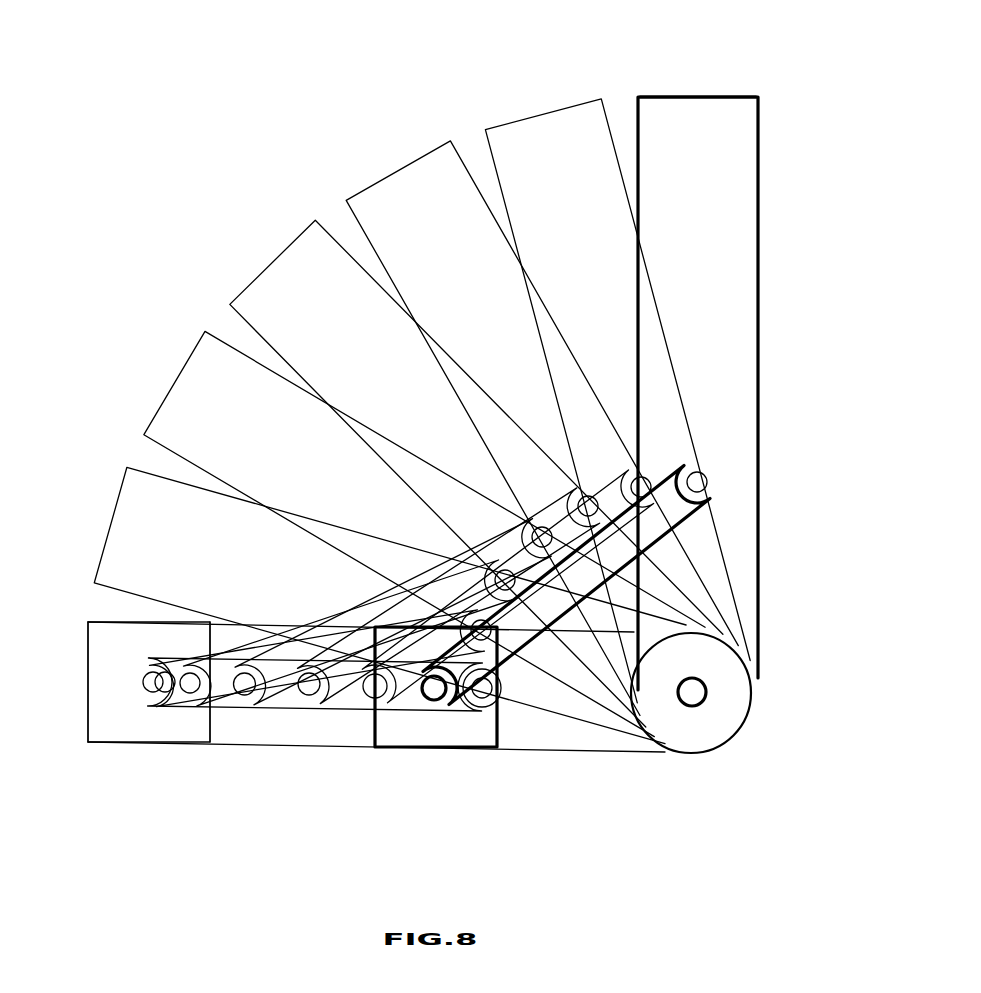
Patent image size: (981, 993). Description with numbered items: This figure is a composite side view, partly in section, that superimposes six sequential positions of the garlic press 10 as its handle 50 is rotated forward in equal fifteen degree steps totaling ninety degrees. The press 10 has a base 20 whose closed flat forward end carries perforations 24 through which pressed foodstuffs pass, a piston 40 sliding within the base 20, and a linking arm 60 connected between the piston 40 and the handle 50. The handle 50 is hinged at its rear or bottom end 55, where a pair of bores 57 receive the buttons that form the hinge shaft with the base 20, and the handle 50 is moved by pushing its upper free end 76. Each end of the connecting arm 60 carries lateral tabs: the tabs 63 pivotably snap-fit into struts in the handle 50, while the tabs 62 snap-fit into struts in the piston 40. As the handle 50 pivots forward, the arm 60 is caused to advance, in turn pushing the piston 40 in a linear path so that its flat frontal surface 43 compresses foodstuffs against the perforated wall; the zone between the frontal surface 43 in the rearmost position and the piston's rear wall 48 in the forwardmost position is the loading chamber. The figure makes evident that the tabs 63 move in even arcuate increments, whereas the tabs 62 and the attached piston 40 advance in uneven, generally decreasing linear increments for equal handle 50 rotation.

The garlic press 10 is at (224, 118).
The base 20 is at (572, 733).
The perforations 24 is at (88, 640).
The piston 40 is at (117, 722).
The flat frontal surface 43 is at (87, 715).
The rear wall 48 is at (213, 723).
The handle 50 is at (713, 175).
The bottom end 55 is at (700, 733).
The bores 57 is at (692, 692).
The linking arm 60 is at (690, 510).
The tabs 62 is at (150, 688).
The tabs 63 is at (713, 466).
The upper free end 76 is at (733, 137).